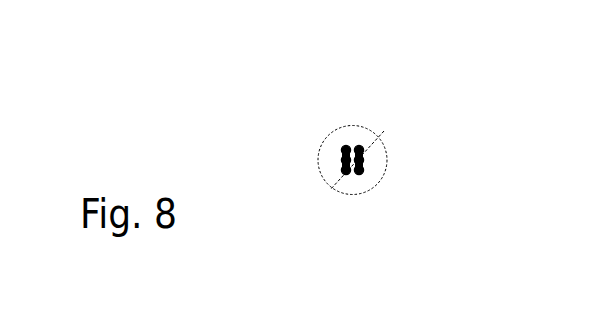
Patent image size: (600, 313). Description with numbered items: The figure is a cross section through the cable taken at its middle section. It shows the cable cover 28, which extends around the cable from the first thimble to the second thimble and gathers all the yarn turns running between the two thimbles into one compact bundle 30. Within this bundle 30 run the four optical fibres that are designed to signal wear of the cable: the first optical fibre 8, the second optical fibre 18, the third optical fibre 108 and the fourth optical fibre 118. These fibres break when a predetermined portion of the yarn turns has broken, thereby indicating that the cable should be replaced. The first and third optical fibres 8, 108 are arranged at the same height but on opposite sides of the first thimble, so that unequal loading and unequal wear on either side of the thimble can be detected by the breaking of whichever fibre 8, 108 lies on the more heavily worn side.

The first optical fibre 8 is at (363, 146).
The second optical fibre 18 is at (364, 155).
The cable cover 28 is at (313, 157).
The compact bundle 30 is at (335, 144).
The third optical fibre 108 is at (349, 146).
The fourth optical fibre 118 is at (338, 158).